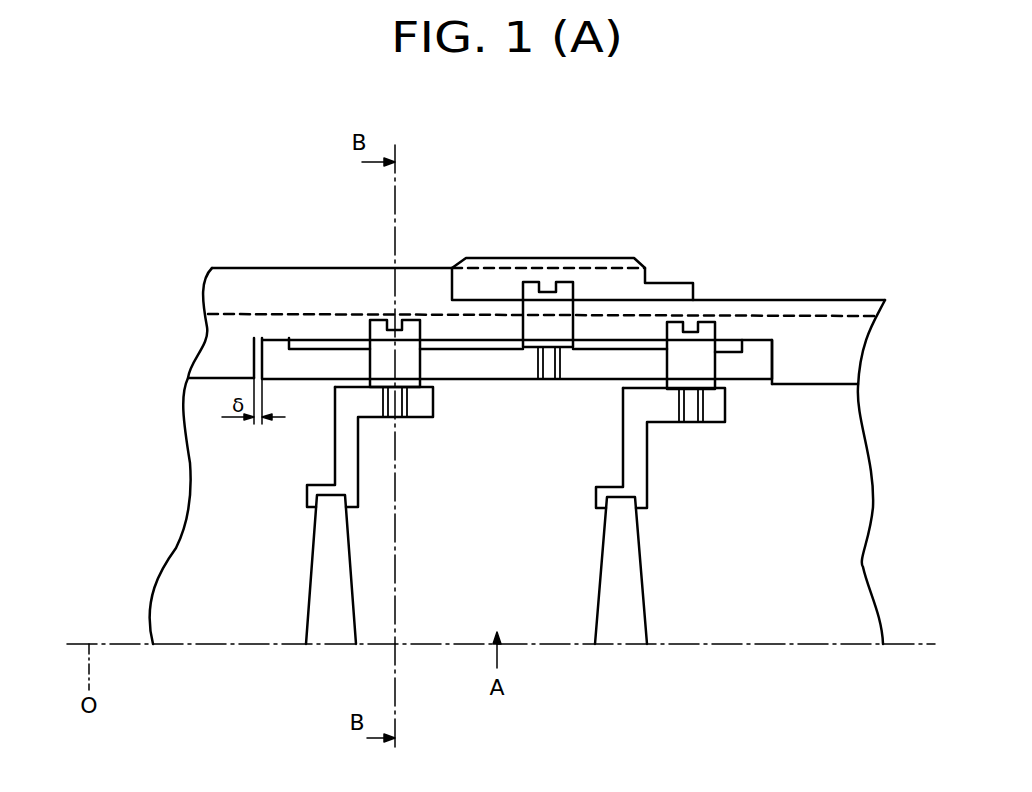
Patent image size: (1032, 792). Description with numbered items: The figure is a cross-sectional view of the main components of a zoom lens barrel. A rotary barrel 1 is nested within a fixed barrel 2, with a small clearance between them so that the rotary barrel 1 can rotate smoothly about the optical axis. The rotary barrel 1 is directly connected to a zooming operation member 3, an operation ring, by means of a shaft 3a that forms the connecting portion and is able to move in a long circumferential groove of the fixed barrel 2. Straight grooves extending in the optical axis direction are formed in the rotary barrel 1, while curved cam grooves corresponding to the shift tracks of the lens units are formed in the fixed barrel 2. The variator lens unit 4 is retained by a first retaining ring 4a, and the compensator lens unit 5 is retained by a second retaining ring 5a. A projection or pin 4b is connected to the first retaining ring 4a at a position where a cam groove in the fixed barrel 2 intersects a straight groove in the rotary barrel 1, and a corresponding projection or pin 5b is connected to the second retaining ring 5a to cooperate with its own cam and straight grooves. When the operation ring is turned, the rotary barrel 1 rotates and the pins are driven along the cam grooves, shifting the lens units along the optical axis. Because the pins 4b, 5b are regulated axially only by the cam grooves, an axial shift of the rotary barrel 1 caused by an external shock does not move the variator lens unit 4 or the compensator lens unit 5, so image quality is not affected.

The rotary barrel 1 is at (750, 387).
The fixed barrel 2 is at (793, 337).
The zooming operation member 3 is at (610, 276).
The shaft 3a is at (532, 290).
The variator lens unit 4 is at (328, 630).
The first retaining ring 4a is at (347, 458).
The projection or pin 4b is at (413, 362).
The compensator lens unit 5 is at (623, 630).
The second retaining ring 5a is at (638, 477).
The projection or pin 5b is at (672, 357).